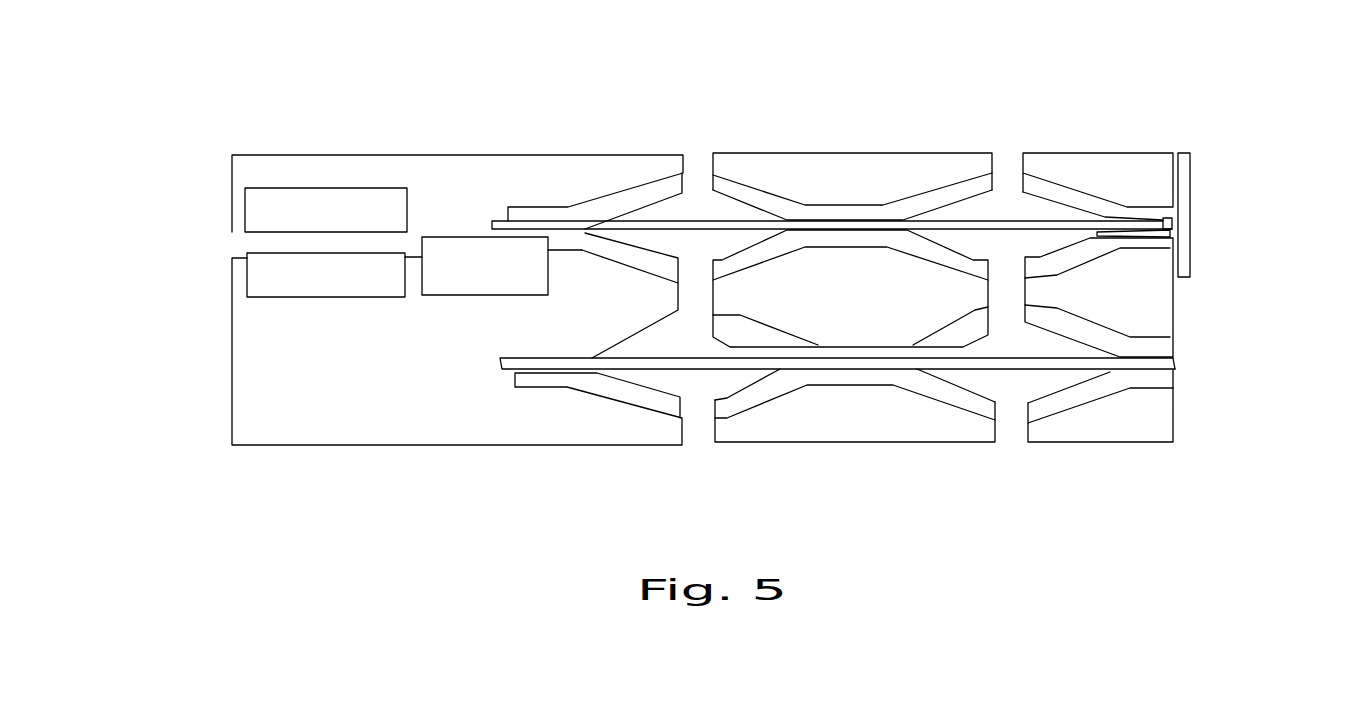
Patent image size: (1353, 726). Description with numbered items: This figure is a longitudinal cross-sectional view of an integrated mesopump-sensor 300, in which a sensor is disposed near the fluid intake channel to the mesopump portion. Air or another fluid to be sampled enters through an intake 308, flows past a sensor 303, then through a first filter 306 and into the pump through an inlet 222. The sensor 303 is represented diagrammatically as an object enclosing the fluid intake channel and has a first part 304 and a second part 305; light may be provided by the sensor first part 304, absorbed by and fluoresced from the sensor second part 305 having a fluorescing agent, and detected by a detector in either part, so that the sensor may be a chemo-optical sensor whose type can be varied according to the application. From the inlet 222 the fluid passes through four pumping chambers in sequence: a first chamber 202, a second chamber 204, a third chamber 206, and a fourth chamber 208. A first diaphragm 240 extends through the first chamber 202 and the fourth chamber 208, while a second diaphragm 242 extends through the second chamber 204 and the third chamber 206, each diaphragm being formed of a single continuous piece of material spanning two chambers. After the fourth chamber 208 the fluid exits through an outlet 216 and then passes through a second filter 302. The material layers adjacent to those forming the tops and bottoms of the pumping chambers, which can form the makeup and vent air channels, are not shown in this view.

The integrated mesopump-sensor 300 is at (910, 67).
The sensor 303 is at (250, 176).
The sensor first part 304 is at (257, 205).
The sensor second part 305 is at (272, 275).
The first filter 306 is at (437, 253).
The intake 308 is at (233, 242).
The inlet 222 is at (585, 218).
The first pumping chamber 202 is at (717, 205).
The first diaphragm 240 is at (937, 225).
The second pumping chamber 204 is at (707, 380).
The second diaphragm 242 is at (982, 363).
The fourth pumping chamber 208 is at (1030, 205).
The outlet 216 is at (1182, 235).
The second filter 302 is at (1182, 183).
The third pumping chamber 206 is at (1035, 382).